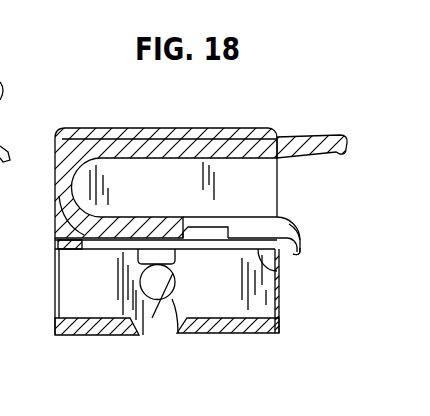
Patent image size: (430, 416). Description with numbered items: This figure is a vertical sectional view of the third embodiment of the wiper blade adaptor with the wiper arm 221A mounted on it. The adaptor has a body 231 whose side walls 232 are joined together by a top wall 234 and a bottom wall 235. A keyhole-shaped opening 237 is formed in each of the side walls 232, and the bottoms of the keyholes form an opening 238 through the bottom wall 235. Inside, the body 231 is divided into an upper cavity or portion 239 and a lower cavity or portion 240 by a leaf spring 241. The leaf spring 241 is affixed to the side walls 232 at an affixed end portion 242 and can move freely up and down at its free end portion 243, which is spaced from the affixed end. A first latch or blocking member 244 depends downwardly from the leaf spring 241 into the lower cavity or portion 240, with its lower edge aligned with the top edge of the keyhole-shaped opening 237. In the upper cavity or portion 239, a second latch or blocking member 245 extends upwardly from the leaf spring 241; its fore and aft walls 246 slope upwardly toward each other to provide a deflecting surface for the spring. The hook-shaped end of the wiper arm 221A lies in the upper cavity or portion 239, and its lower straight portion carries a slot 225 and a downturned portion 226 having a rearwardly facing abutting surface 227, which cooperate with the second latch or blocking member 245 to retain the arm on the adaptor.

The body 231 is at (60, 152).
The top wall 234 is at (140, 130).
The wiper arm 221A is at (323, 125).
The upper cavity or portion 239 is at (266, 170).
The slot 225 is at (282, 218).
The downturned portion 226 is at (298, 238).
The rearwardly facing abutting surface 227 is at (285, 257).
The free end portion 243 is at (282, 273).
The lower cavity or portion 240 is at (278, 292).
The leaf spring 241 is at (220, 243).
The affixed end portion 242 is at (57, 243).
The first latch or blocking member 244 is at (147, 253).
The side walls 232 is at (70, 307).
The keyhole-shaped opening 237 is at (143, 335).
The opening 238 is at (170, 330).
The bottom wall 235 is at (238, 334).
The second latch or blocking member 245 is at (200, 231).
The fore and aft walls 246 is at (236, 226).